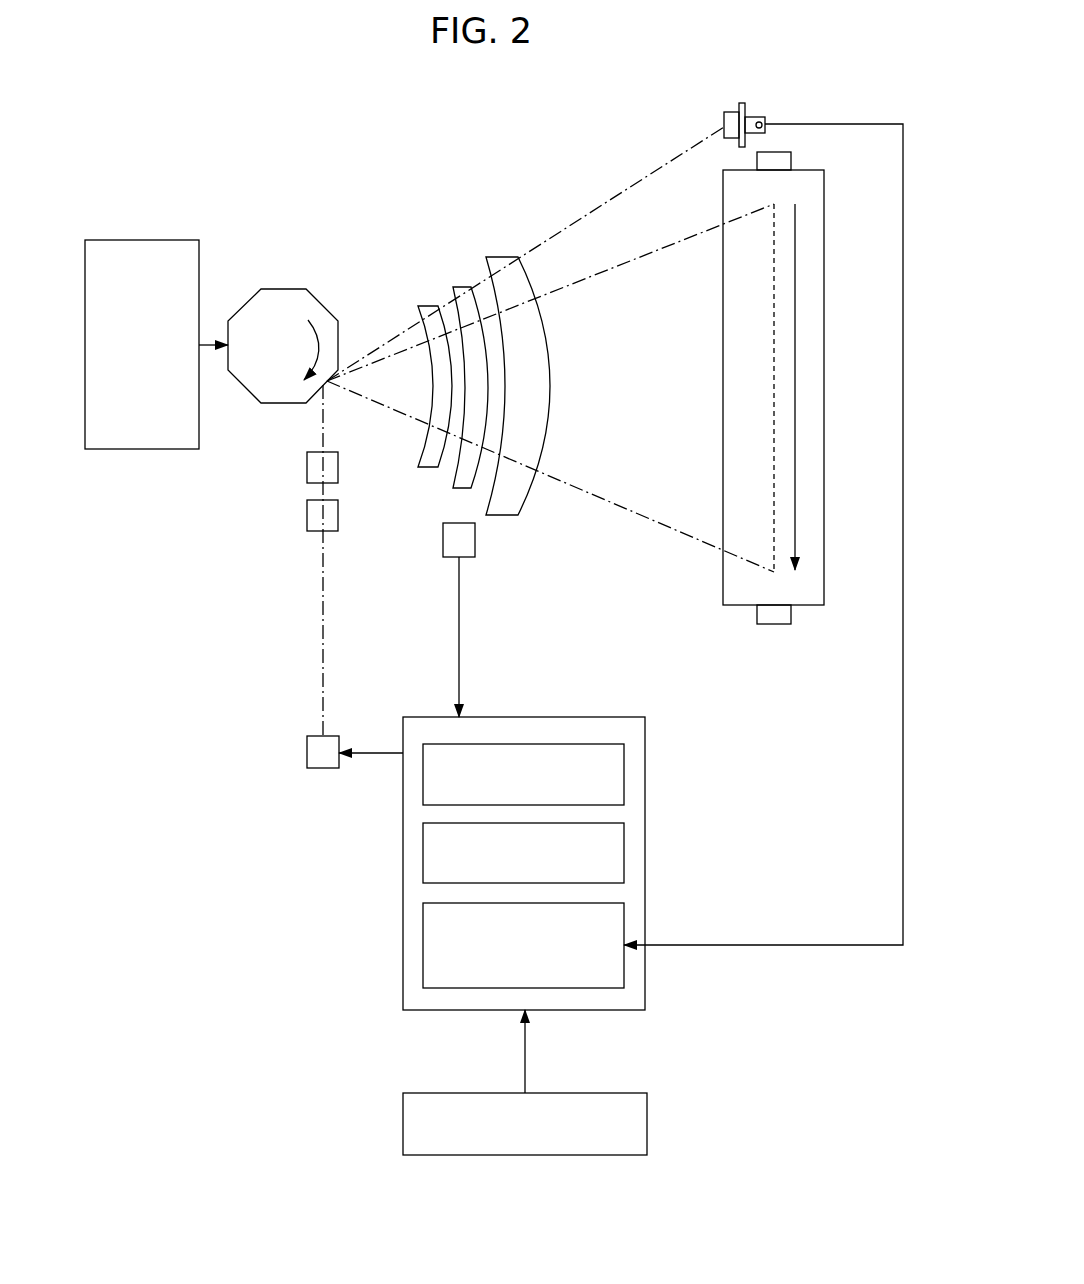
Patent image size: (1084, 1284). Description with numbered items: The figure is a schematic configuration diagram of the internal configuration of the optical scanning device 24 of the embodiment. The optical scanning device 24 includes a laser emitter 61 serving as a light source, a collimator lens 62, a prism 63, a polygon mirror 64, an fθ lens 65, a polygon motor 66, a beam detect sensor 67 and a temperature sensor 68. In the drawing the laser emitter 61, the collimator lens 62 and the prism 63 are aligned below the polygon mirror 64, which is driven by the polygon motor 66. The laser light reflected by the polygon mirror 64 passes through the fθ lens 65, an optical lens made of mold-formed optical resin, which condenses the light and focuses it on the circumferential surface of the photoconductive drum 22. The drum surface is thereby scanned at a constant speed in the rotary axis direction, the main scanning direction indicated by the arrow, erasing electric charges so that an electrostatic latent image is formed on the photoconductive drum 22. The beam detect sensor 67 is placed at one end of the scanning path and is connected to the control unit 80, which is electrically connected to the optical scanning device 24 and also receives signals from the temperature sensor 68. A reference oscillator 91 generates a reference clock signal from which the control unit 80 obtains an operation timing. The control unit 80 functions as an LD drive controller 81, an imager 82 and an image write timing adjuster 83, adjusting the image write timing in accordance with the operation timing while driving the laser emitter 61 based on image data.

The photoconductive drum 22 is at (824, 577).
The optical scanning device 24 is at (625, 133).
The laser emitter 61 is at (307, 752).
The collimator lens 62 is at (307, 516).
The prism 63 is at (307, 467).
The polygon mirror 64 is at (289, 289).
The fθ lens 65 is at (457, 243).
The polygon motor 66 is at (163, 240).
The beam detect sensor 67 is at (753, 113).
The temperature sensor 68 is at (443, 542).
The control unit 80 is at (625, 717).
The LD drive controller 81 is at (624, 780).
The imager 82 is at (624, 853).
The image write timing adjuster 83 is at (624, 908).
The reference oscillator 91 is at (647, 1105).